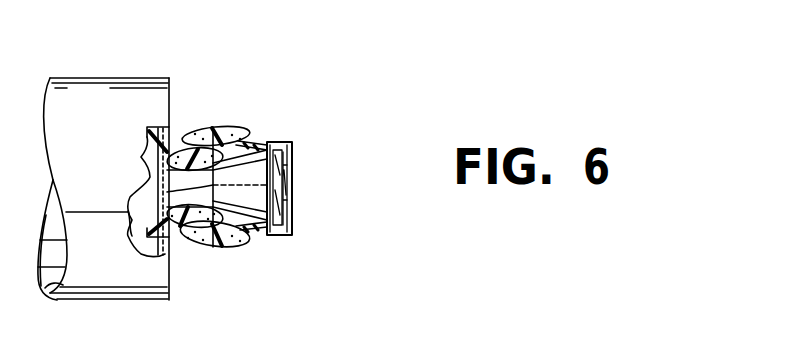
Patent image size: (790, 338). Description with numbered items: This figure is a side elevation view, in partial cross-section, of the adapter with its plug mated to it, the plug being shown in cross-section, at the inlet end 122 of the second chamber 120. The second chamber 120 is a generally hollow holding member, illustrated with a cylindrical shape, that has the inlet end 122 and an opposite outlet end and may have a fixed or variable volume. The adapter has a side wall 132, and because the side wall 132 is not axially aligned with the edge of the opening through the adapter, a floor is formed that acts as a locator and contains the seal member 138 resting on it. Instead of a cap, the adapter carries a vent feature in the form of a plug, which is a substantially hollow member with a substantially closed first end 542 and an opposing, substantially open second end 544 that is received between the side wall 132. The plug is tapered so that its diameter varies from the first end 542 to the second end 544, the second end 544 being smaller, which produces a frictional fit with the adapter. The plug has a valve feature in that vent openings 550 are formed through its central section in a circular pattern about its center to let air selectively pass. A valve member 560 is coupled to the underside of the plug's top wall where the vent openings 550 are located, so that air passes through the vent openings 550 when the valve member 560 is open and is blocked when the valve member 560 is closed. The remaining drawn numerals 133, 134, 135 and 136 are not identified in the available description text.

The second chamber 120 is at (127, 92).
The inlet end 122 is at (170, 127).
The side wall 132 is at (220, 133).
The bore wall 133 is at (167, 265).
The nut 134 is at (147, 137).
The lower sealing ring 135 is at (212, 247).
The lower outer ring 136 is at (250, 238).
The seal member 138 is at (253, 132).
The first end 542 is at (292, 222).
The second end 544 is at (163, 192).
The vent opening 550 is at (292, 192).
The valve member 560 is at (292, 163).